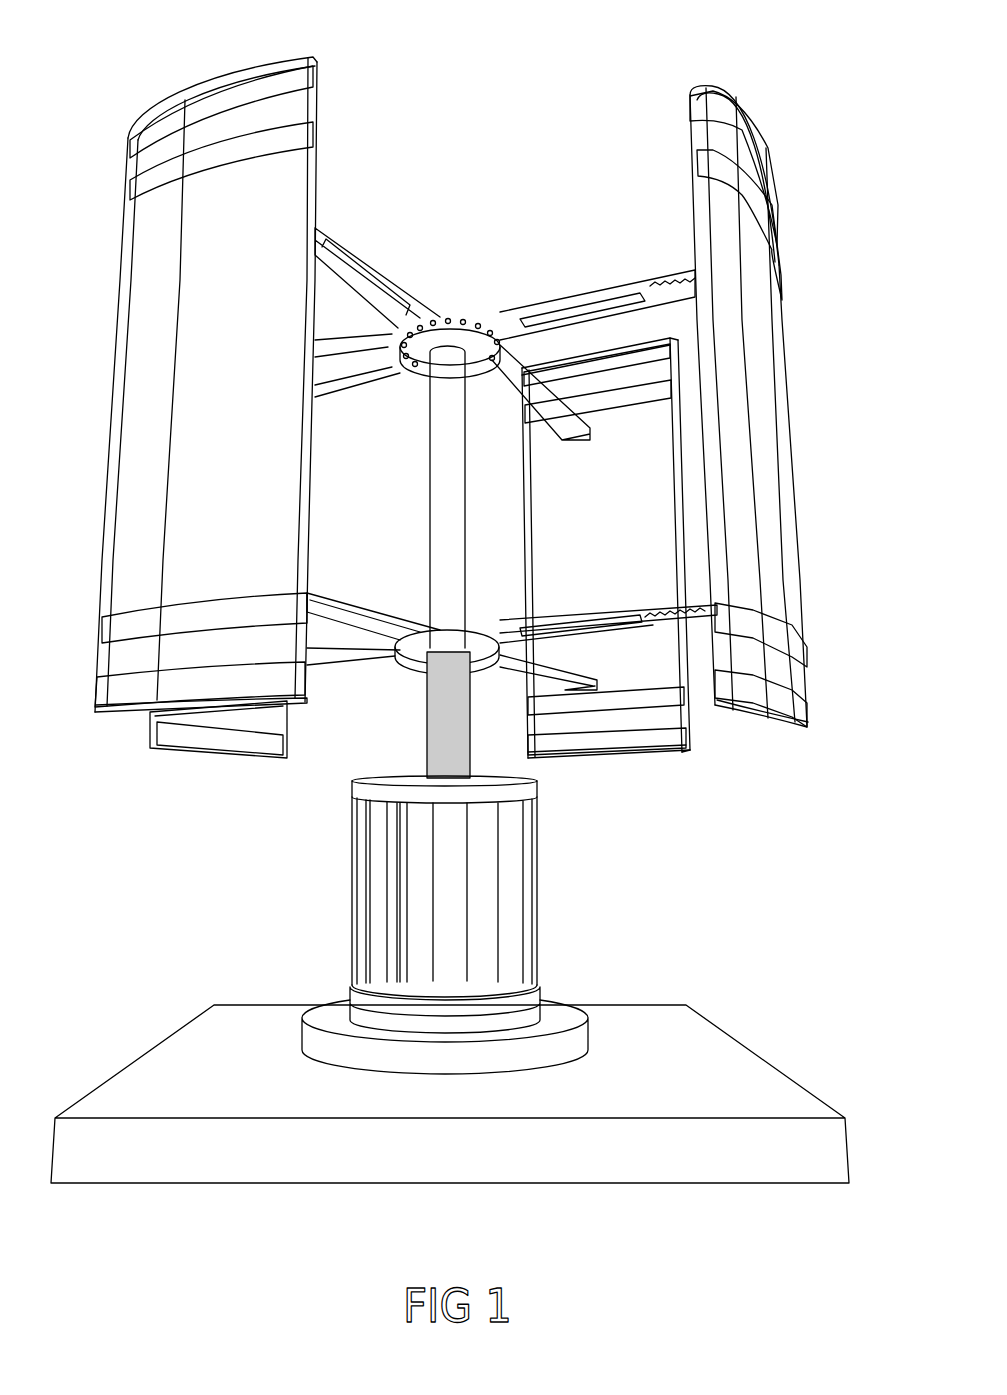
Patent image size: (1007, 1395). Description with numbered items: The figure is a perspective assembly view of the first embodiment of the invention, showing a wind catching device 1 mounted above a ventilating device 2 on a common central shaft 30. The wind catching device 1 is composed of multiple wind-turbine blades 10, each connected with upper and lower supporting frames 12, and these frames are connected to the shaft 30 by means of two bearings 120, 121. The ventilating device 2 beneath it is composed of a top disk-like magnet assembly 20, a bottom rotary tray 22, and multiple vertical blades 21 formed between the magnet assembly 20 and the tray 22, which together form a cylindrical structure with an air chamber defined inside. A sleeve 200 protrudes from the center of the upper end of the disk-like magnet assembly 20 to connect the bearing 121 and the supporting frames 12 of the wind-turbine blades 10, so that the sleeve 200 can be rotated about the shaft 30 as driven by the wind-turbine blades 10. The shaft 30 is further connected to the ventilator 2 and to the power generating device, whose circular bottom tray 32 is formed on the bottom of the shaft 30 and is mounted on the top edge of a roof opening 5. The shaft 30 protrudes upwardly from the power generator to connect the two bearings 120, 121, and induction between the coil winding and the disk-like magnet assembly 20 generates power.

The wind catching device 1 is at (467, 98).
The ventilating device 2 is at (593, 893).
The roof opening 5 is at (718, 1055).
The wind-turbine blades 10 is at (688, 110).
The supporting frames 12 is at (600, 292).
The disk-like magnet assembly 20 is at (527, 790).
The vertical blades 21 is at (360, 917).
The bottom rotary tray 22 is at (535, 990).
The shaft 30 is at (440, 465).
The circular bottom tray 32 is at (375, 1020).
The bearing 120 is at (443, 340).
The bearing 121 is at (482, 655).
The sleeve 200 is at (440, 748).